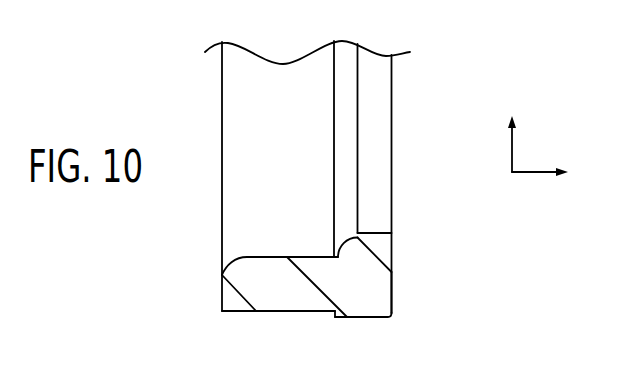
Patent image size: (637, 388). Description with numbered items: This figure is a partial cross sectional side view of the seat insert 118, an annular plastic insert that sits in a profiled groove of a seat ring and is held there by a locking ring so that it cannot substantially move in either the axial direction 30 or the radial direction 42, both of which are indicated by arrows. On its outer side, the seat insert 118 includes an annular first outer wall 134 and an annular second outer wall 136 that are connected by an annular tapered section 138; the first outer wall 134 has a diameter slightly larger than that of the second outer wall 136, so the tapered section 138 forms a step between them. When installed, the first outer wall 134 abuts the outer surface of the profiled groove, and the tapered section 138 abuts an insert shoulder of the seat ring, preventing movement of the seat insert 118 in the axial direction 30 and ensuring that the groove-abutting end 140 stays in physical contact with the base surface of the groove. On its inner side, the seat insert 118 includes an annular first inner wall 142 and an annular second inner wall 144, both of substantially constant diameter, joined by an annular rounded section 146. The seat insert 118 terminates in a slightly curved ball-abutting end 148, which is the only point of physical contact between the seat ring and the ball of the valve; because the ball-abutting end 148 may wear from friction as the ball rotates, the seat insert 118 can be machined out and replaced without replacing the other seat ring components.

The seat insert 118 is at (158, 78).
The first outer wall 134 is at (362, 318).
The second outer wall 136 is at (264, 311).
The tapered section 138 is at (327, 317).
The groove-abutting end 140 is at (392, 283).
The first inner wall 142 is at (373, 232).
The second inner wall 144 is at (274, 257).
The rounded section 146 is at (353, 248).
The ball-abutting end 148 is at (228, 268).
The radial direction 42 is at (510, 150).
The axial direction 30 is at (535, 173).